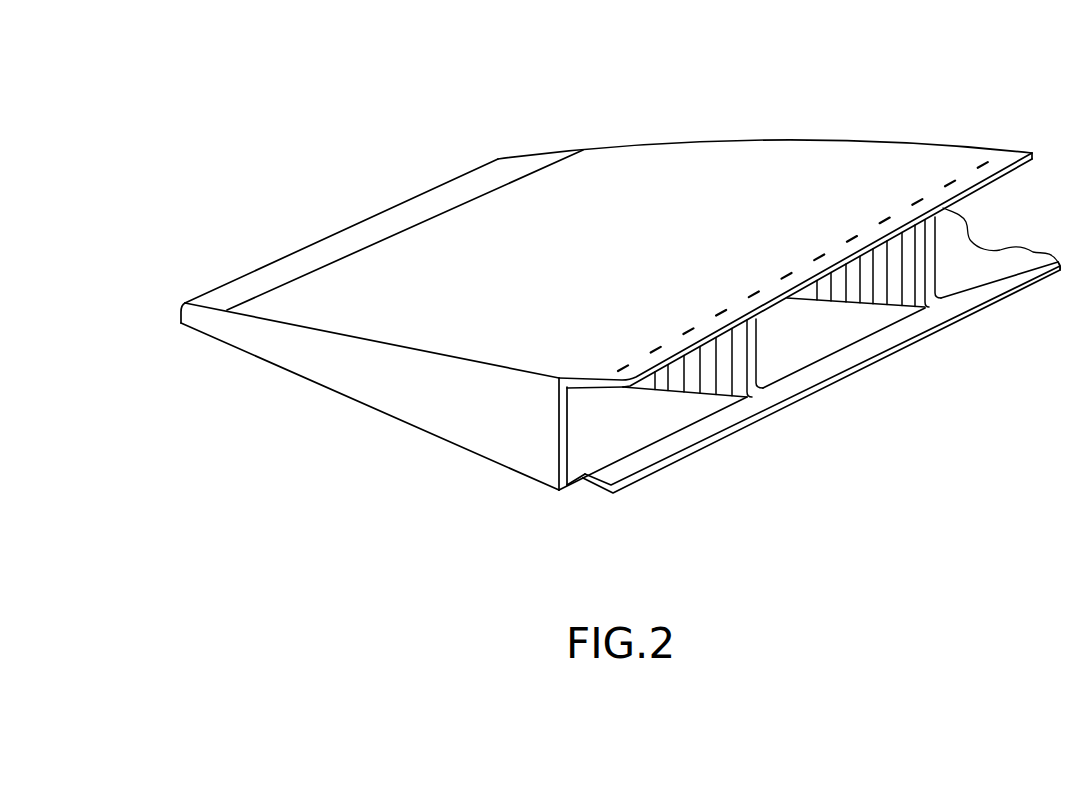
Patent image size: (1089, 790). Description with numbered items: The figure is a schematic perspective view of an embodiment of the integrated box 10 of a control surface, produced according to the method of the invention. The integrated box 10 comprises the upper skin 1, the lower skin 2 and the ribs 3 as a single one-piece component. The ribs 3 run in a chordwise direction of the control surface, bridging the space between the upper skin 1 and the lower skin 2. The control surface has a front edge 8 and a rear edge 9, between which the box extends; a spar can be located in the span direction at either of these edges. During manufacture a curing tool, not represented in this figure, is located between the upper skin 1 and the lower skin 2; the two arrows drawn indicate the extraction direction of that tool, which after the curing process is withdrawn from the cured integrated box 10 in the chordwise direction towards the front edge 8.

The upper skin 1 is at (802, 165).
The lower skin 2 is at (572, 502).
The ribs 3 is at (917, 280).
The front edge 8 is at (648, 502).
The rear edge 9 is at (198, 337).
The integrated box 10 is at (370, 425).